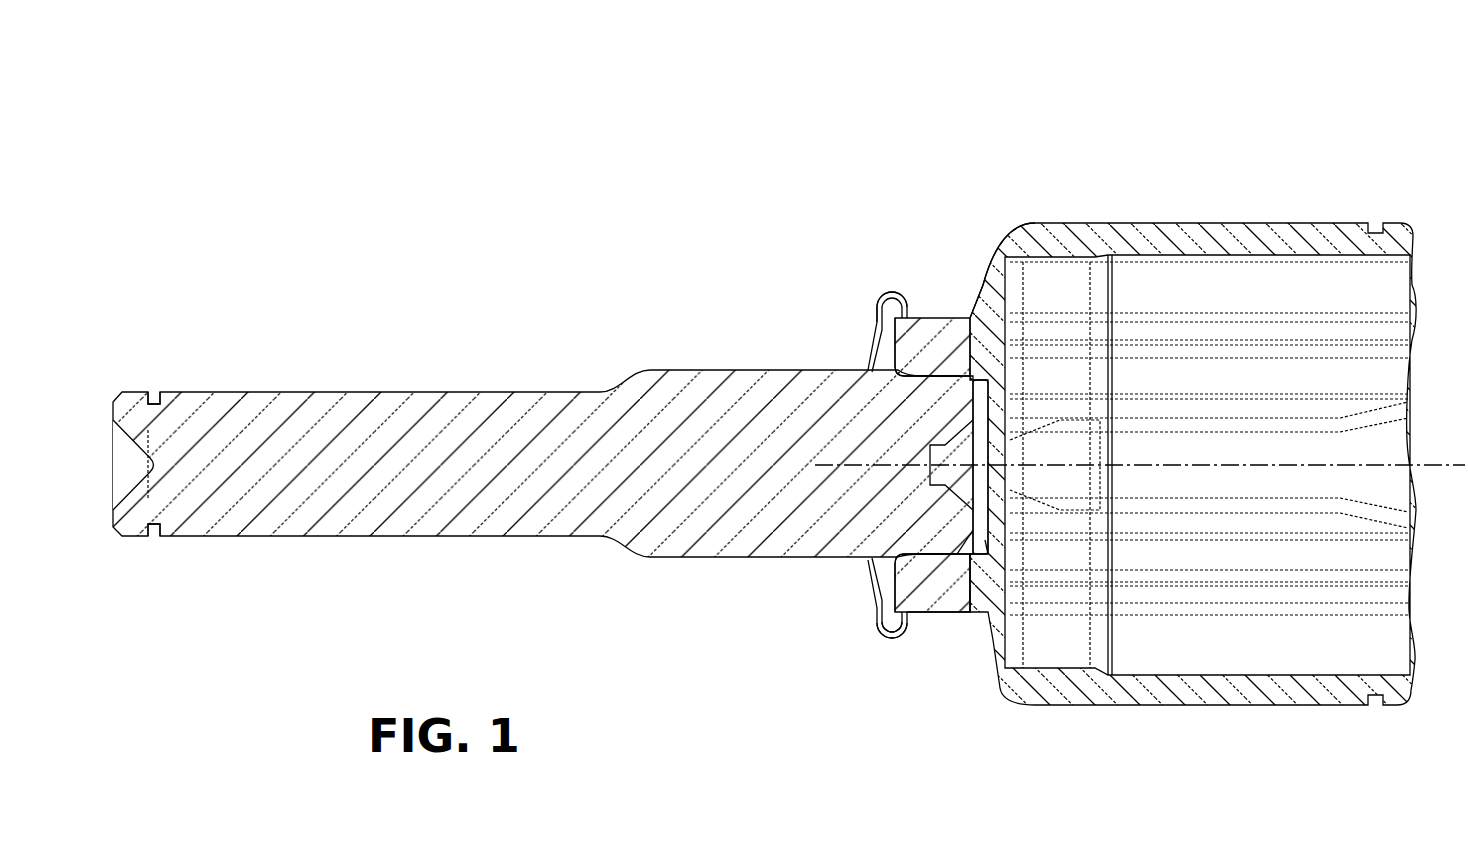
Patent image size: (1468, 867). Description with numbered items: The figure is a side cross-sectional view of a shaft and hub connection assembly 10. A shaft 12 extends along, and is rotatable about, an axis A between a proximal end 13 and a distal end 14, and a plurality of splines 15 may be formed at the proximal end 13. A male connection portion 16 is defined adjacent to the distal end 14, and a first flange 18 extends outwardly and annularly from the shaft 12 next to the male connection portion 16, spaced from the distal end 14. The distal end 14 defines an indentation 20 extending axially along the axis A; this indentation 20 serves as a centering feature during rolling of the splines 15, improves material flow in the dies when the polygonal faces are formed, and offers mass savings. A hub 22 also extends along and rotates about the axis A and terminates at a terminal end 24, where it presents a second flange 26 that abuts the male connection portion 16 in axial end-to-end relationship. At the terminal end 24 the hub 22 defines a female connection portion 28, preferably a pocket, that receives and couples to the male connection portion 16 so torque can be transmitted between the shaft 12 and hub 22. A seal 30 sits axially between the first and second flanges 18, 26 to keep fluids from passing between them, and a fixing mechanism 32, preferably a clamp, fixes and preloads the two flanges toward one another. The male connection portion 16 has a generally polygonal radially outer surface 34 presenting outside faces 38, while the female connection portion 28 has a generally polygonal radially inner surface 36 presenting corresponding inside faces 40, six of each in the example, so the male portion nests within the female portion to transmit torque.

The shaft and hub connection assembly 10 is at (994, 100).
The shaft 12 is at (688, 362).
The proximal end 13 is at (105, 513).
The distal end 14 is at (992, 665).
The splines 15 is at (202, 537).
The male connection portion 16 is at (930, 362).
The first flange 18 is at (870, 352).
The indentation 20 is at (963, 500).
The hub 22 is at (920, 624).
The terminal end 24 is at (876, 603).
The second flange 26 is at (906, 298).
The female connection portion 28 is at (913, 382).
The seal 30 is at (894, 292).
The fixing mechanism 32 is at (877, 300).
The radially outer surface 34 is at (958, 614).
The radially inner surface 36 is at (880, 622).
The outside faces 38 is at (979, 290).
The inside faces 40 is at (892, 627).
The axis A is at (1424, 463).